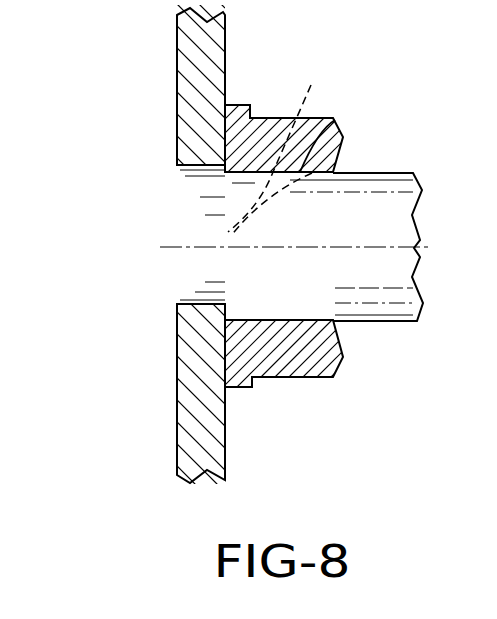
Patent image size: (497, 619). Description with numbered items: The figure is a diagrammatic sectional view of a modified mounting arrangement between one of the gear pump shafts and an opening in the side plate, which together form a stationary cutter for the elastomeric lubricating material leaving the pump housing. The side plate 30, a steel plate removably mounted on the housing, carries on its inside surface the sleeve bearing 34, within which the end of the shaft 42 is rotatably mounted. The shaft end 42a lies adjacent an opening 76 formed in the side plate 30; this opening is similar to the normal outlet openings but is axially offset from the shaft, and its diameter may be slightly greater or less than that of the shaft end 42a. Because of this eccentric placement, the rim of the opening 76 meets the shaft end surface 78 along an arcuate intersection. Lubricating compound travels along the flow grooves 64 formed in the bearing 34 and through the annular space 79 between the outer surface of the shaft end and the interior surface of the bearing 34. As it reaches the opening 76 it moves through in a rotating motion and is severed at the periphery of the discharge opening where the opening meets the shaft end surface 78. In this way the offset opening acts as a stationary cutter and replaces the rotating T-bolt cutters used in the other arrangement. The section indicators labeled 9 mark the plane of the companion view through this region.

The section line 9- 9 is at (70, 380).
The side plate 30 is at (227, 62).
The sleeve bearing 34 is at (250, 390).
The shaft 42 is at (401, 165).
The shaft end 42a is at (242, 282).
The flow grooves 64 is at (357, 98).
The opening 76 is at (202, 168).
The shaft end surface 78 is at (226, 265).
The annular space 79 is at (330, 318).